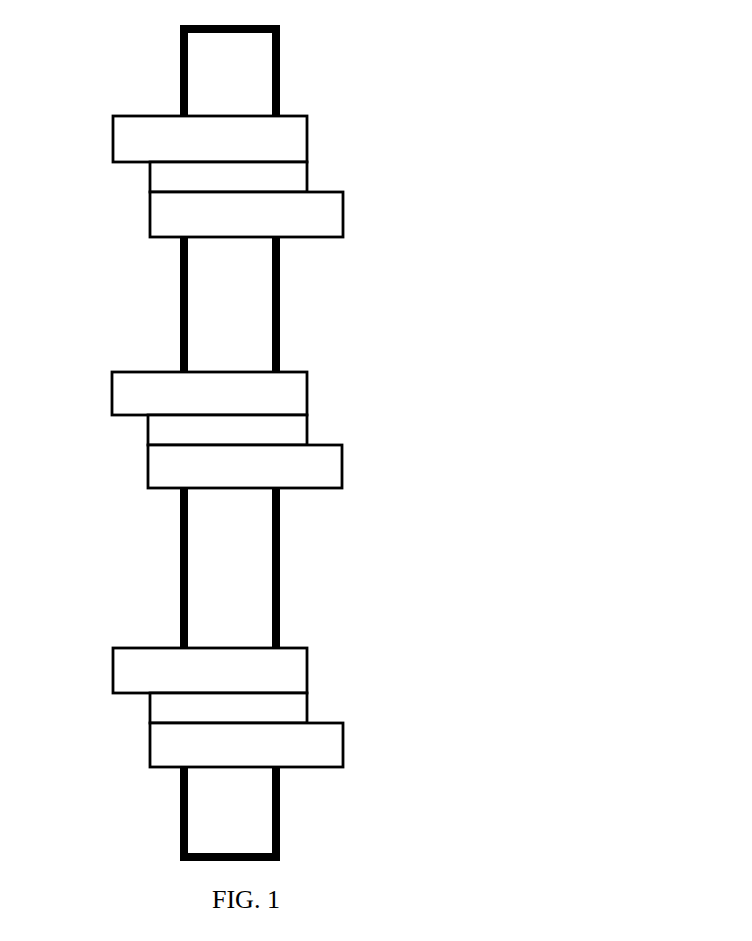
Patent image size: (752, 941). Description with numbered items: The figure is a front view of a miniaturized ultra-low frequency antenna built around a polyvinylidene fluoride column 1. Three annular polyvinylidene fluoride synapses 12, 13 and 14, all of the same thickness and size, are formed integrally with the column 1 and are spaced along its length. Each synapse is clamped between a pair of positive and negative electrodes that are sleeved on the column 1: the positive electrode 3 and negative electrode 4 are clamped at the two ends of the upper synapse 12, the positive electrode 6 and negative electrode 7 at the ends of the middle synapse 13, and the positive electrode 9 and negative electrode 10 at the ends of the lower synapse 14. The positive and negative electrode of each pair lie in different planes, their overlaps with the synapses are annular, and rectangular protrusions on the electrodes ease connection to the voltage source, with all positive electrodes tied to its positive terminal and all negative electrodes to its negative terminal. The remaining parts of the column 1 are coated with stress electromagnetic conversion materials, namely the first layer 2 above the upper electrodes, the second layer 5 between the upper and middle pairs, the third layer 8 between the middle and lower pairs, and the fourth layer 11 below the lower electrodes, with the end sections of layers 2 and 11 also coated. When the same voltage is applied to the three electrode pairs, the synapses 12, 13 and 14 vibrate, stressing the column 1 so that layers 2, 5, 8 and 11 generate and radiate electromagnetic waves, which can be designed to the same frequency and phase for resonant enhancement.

The polyvinylidene fluoride column 1 is at (245, 558).
The first stress electromagnetic conversion material layer 2 is at (405, 49).
The positive electrode 3 is at (113, 140).
The negative electrode 4 is at (445, 222).
The second stress electromagnetic conversion material layer 5 is at (405, 307).
The positive electrode 6 is at (112, 397).
The negative electrode 7 is at (443, 478).
The third stress electromagnetic conversion material layer 8 is at (403, 617).
The positive electrode 9 is at (113, 672).
The negative electrode 10 is at (437, 758).
The fourth stress electromagnetic conversion material layer 11 is at (405, 829).
The annular polyvinylidene fluoride synapse 12 is at (435, 177).
The annular polyvinylidene fluoride synapse 13 is at (307, 428).
The annular polyvinylidene fluoride synapse 14 is at (437, 708).